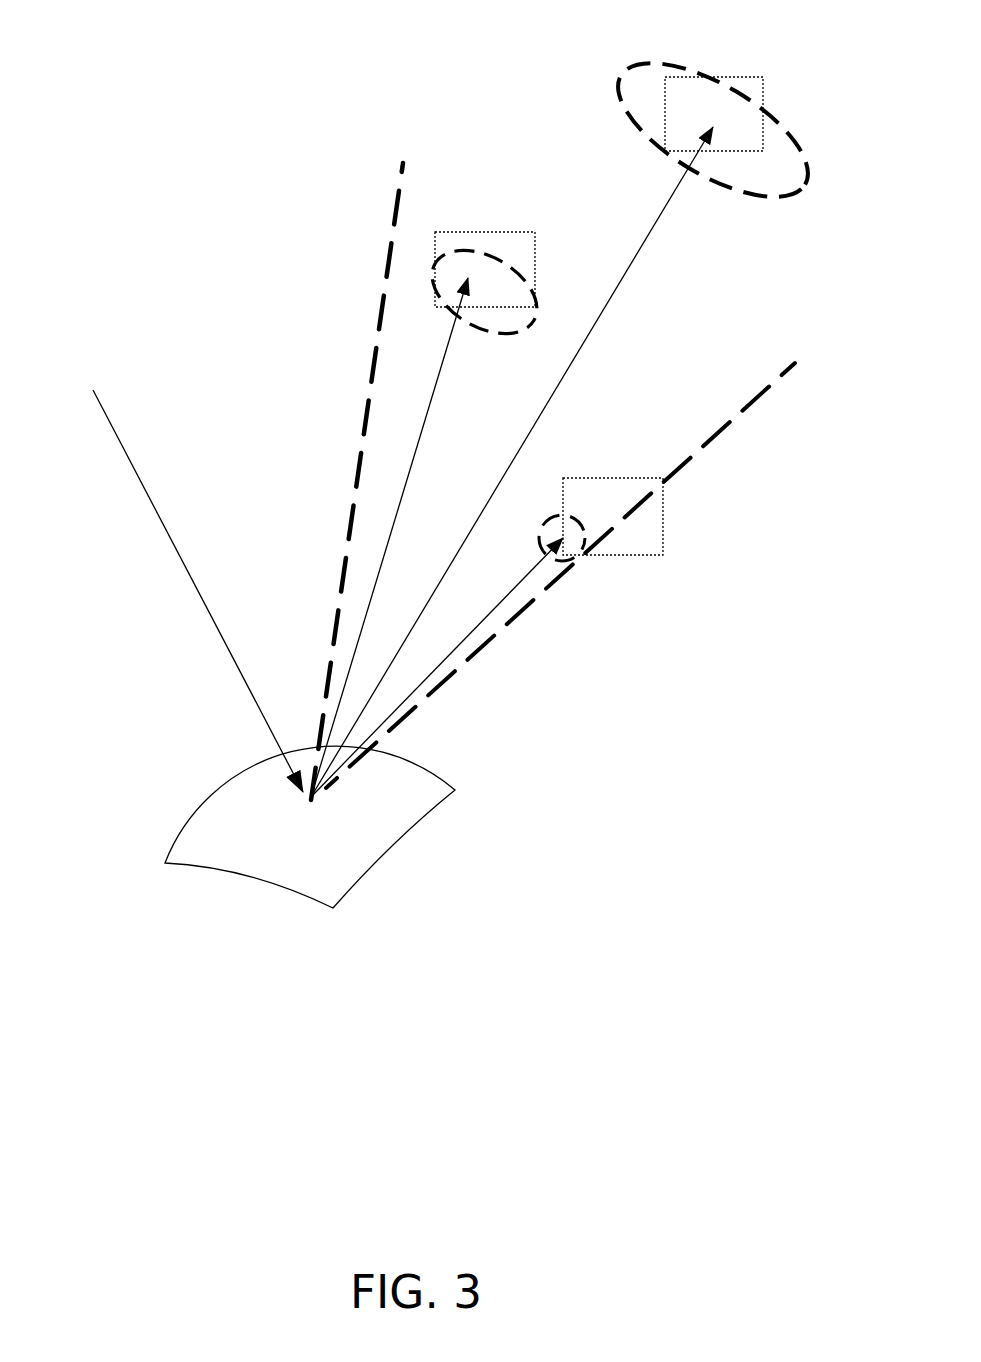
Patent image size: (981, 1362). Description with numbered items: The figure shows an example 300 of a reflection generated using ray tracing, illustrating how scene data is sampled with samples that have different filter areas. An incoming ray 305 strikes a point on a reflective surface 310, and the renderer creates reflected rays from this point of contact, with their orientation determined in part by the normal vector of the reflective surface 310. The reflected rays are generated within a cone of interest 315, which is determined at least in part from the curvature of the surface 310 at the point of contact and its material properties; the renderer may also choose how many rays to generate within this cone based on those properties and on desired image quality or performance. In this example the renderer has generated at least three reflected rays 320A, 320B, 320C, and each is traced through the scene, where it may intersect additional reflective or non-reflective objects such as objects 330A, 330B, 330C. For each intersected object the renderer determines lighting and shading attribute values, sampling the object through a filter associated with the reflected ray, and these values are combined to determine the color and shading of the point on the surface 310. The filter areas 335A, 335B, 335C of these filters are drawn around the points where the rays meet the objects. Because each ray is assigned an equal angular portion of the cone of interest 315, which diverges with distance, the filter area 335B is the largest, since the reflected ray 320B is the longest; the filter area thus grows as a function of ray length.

The example 300 is at (100, 17).
The incoming ray 305 is at (170, 538).
The reflective surface 310 is at (285, 878).
The cone of interest 315 is at (347, 535).
The reflected ray 320A is at (423, 423).
The reflected ray 320B is at (575, 357).
The reflected ray 320C is at (458, 642).
The object 330A is at (487, 232).
The object 330B is at (747, 77).
The object 330C is at (658, 507).
The filter area 335A is at (432, 271).
The filter area 335B is at (618, 85).
The filter area 335C is at (567, 563).